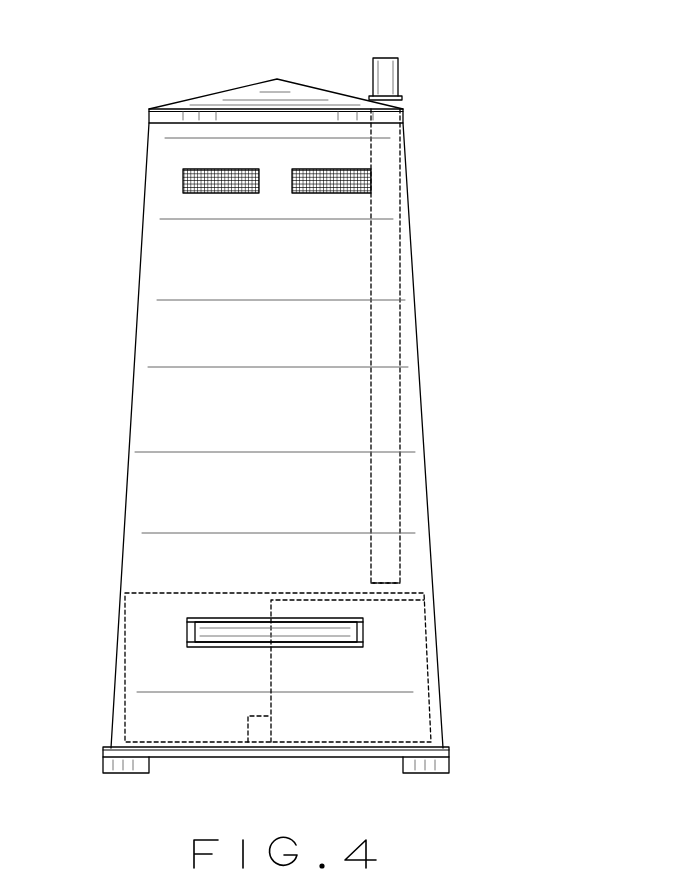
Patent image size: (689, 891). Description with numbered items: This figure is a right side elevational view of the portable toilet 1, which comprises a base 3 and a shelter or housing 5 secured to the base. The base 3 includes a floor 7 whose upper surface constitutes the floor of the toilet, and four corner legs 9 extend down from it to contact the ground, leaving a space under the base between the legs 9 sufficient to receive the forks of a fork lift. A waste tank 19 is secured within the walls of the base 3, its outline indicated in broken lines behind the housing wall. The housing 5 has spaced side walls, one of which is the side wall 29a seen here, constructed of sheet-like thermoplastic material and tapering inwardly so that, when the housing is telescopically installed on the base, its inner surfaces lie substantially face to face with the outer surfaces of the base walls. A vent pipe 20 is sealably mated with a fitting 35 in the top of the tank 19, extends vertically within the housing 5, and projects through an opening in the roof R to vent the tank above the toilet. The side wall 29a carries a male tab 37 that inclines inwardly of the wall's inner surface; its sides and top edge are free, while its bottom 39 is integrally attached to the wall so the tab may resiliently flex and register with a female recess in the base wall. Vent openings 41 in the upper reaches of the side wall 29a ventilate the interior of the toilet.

The portable toilet 1 is at (342, 460).
The base 3 is at (272, 769).
The housing 5 is at (416, 292).
The floor 7 is at (178, 741).
The corner legs 9 is at (433, 761).
The waste tank 19 is at (268, 672).
The vent pipe 20 is at (400, 67).
The side wall 29a is at (215, 405).
The fitting 35 is at (404, 583).
The male tab 37 is at (301, 634).
The bottom of tab 39 is at (347, 649).
The vent openings 41 is at (220, 194).
The roof R is at (230, 88).